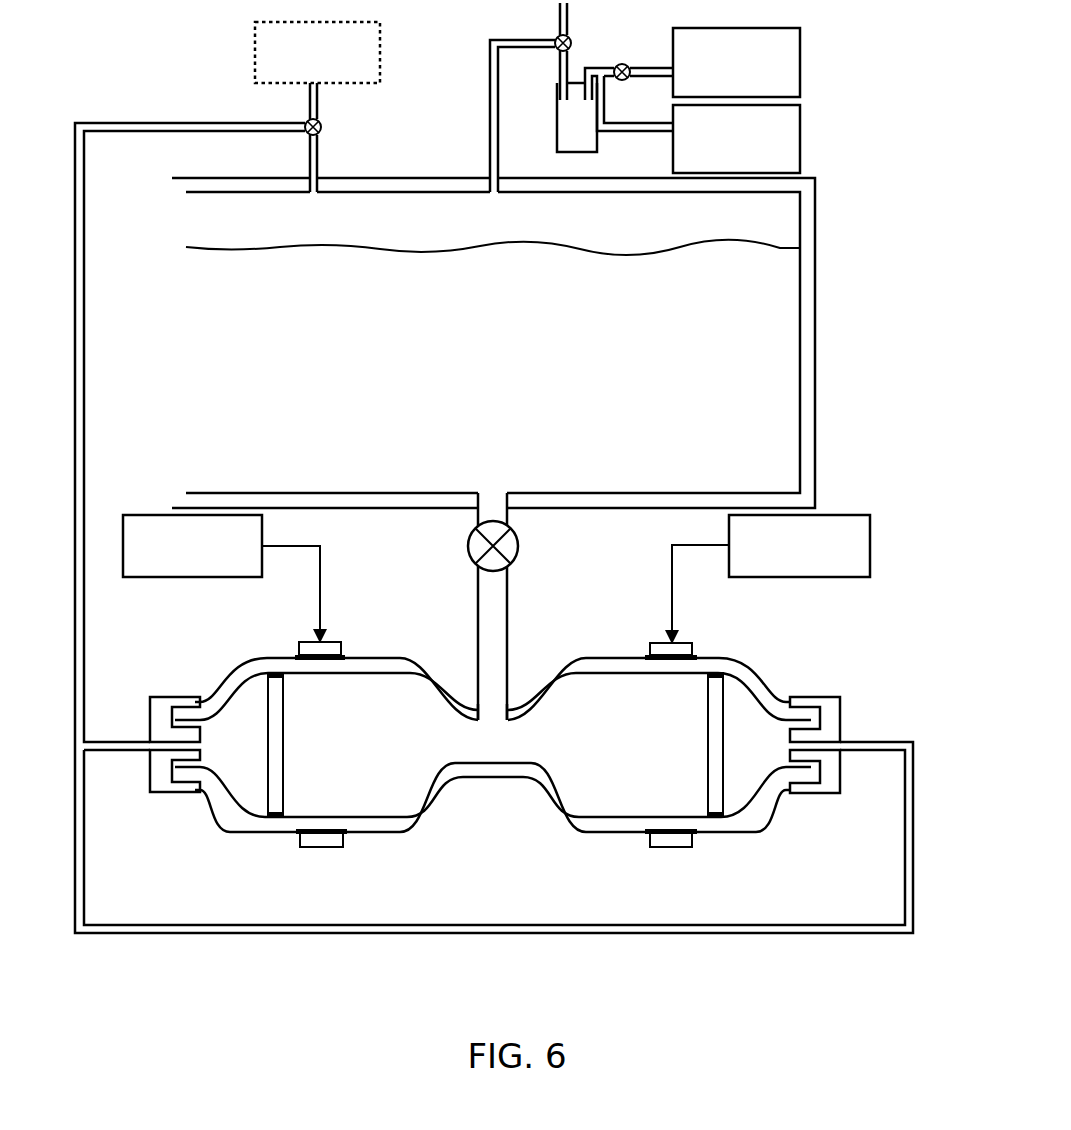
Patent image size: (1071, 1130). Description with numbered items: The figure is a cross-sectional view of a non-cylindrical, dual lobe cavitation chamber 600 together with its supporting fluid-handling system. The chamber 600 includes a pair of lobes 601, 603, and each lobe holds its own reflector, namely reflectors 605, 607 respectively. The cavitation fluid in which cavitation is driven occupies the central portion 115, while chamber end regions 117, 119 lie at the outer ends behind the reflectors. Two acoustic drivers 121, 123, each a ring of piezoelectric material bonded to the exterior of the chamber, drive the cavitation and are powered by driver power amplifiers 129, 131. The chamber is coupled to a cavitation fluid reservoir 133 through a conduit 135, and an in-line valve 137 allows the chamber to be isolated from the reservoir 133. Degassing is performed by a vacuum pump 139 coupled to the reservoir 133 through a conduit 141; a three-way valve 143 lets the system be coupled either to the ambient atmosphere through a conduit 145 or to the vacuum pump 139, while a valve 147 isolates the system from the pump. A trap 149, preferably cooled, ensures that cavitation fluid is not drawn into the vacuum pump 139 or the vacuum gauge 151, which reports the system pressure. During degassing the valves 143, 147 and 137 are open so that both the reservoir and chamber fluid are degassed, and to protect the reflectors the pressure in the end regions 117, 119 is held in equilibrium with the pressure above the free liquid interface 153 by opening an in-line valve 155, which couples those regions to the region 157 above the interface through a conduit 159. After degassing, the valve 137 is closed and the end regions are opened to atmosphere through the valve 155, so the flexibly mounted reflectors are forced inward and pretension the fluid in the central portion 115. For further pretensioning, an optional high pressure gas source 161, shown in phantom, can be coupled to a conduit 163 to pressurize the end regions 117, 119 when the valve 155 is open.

The central portion 115 is at (474, 751).
The chamber end region 117 is at (261, 732).
The chamber end region 119 is at (771, 732).
The acoustic driver 121 is at (321, 839).
The acoustic driver 123 is at (671, 841).
The driver power amplifier 129 is at (123, 545).
The driver power amplifier 131 is at (856, 514).
The cavitation fluid reservoir 133 is at (816, 342).
The conduit 135 is at (492, 583).
The in-line valve 137 is at (467, 548).
The vacuum pump 139 is at (802, 60).
The conduit 141 is at (489, 133).
The three-way valve 143 is at (572, 42).
The conduit 145 is at (558, 22).
The valve 147 is at (622, 64).
The trap 149 is at (556, 117).
The vacuum gauge 151 is at (802, 138).
The free liquid interface 153 is at (594, 245).
The in-line valve 155 is at (322, 127).
The region above free liquid interface 157 is at (462, 232).
The conduit 159 is at (162, 122).
The high pressure gas source 161 is at (253, 51).
The conduit 163 is at (318, 91).
The chamber 600 is at (470, 859).
The lobe 601 is at (399, 639).
The lobe 603 is at (591, 642).
The reflector 605 is at (277, 768).
The reflector 607 is at (716, 762).